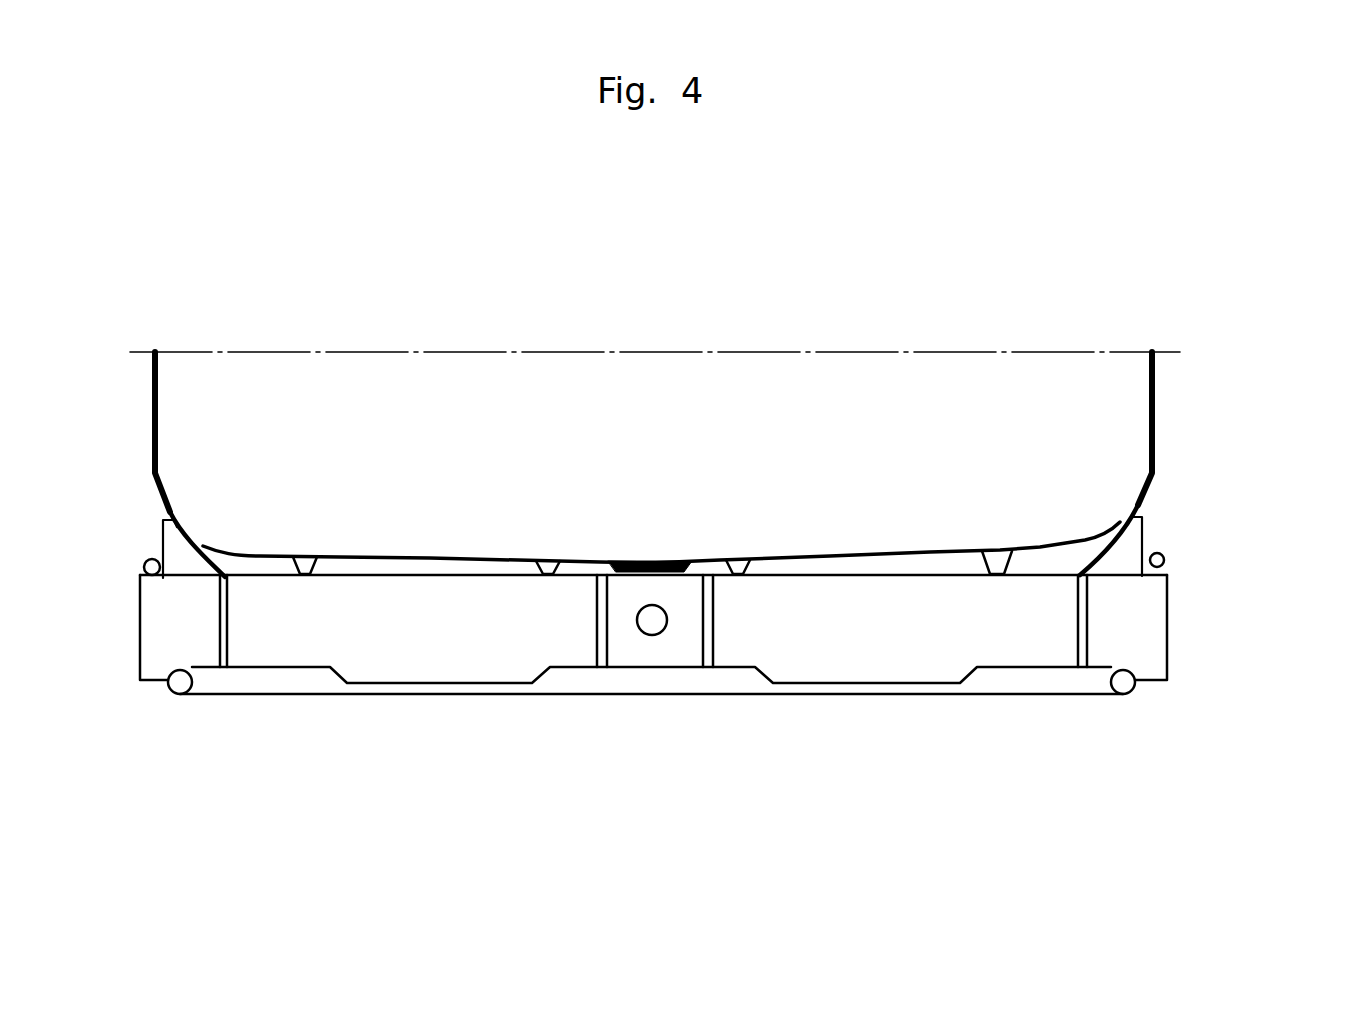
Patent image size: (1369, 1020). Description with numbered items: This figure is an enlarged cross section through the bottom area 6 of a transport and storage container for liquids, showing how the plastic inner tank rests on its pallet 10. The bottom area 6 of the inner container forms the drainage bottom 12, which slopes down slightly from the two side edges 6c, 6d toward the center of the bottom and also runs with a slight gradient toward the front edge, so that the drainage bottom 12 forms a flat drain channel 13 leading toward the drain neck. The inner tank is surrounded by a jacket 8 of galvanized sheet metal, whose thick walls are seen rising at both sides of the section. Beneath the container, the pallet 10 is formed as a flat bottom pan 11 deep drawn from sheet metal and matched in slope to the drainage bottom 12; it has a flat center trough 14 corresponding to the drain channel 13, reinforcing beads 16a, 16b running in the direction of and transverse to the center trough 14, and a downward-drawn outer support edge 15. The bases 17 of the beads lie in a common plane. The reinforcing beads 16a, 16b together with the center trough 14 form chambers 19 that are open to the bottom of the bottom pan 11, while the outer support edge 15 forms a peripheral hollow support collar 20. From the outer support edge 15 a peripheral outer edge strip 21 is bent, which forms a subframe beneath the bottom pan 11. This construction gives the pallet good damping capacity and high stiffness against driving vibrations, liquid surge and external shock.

The bottom area 6 is at (885, 533).
The side edge 6c is at (1100, 537).
The side edge 6d is at (198, 547).
The jacket 8 is at (1153, 392).
The pallet 10 is at (1195, 643).
The bottom pan 11 is at (178, 548).
The drainage bottom 12 is at (478, 543).
The drain channel 13 is at (673, 563).
The center trough 14 is at (627, 562).
The outer support edge 15 is at (1150, 536).
The reinforcing beads 16a is at (307, 550).
The reinforcing beads 16b is at (410, 567).
The bases of the beads 17 is at (403, 588).
The chambers 19 is at (337, 568).
The hollow support collar 20 is at (207, 555).
The outer edge strip 21 is at (1151, 574).